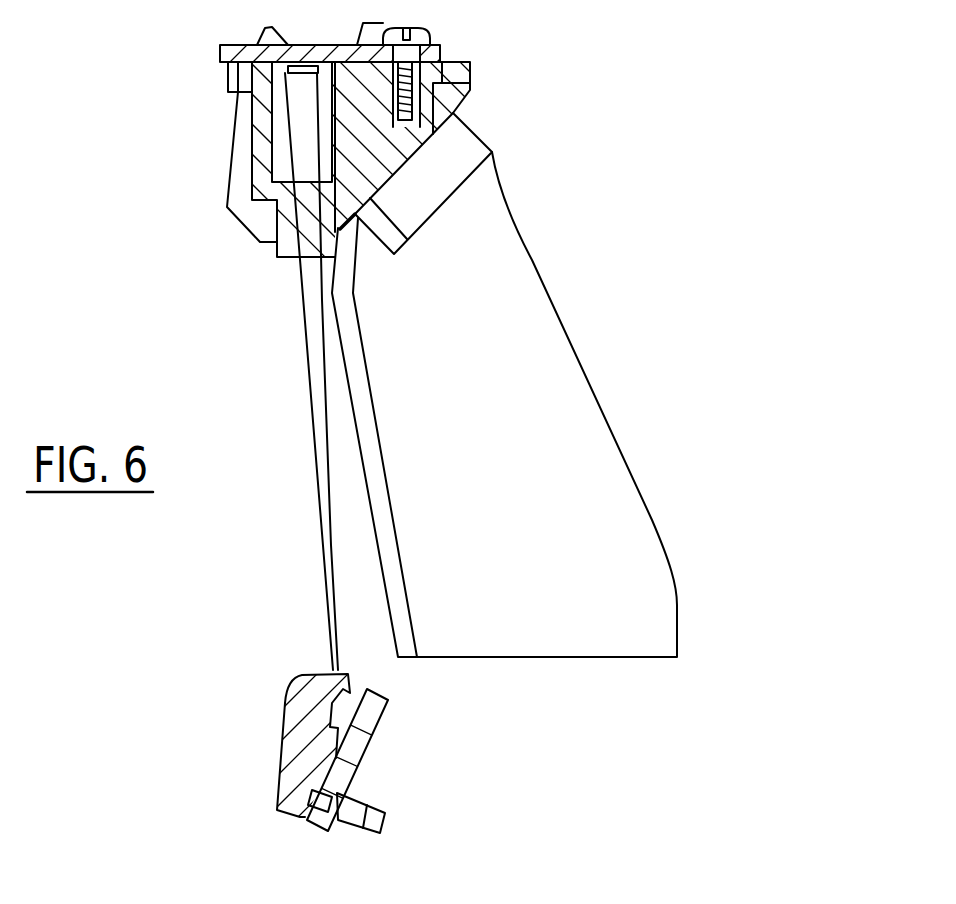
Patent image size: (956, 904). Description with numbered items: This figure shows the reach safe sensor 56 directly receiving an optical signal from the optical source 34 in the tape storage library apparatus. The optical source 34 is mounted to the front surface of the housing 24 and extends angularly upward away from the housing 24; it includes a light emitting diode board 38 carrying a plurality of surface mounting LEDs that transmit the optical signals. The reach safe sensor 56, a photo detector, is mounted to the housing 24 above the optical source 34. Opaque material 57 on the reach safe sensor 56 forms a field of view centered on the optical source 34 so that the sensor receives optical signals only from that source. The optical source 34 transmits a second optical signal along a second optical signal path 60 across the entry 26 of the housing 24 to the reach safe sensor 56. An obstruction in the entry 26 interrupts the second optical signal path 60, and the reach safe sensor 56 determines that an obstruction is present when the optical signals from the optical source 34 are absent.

The housing 24 is at (453, 70).
The entry 26 is at (395, 558).
The optical source 34 is at (285, 738).
The light emitting diode (LED) board 38 is at (347, 720).
The reach safe sensor 56 is at (287, 75).
The opaque material 57 is at (280, 222).
The second optical signal path 60 is at (322, 544).